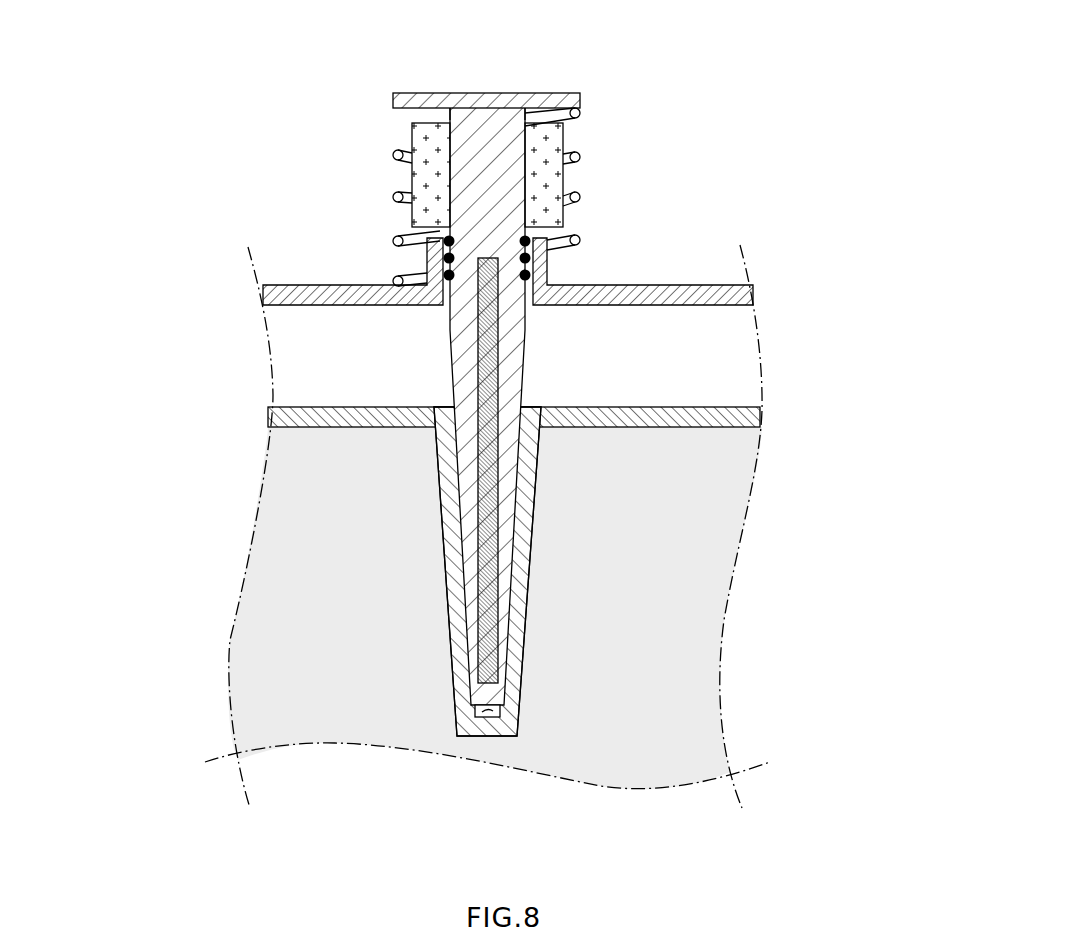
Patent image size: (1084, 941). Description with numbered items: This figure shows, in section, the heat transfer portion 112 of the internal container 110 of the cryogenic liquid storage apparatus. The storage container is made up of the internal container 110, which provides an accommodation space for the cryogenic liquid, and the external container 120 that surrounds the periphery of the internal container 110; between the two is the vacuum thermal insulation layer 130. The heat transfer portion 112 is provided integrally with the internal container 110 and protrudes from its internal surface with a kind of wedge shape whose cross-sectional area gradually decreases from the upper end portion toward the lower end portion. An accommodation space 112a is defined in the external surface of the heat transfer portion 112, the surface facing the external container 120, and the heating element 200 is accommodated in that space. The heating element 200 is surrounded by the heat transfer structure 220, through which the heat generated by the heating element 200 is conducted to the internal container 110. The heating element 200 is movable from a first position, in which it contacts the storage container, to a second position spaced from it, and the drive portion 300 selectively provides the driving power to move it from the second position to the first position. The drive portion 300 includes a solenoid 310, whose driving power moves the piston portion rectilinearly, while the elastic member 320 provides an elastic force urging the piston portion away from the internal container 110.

The internal container 110 is at (267, 413).
The heat transfer portion 112 is at (469, 726).
The accommodation space 112a is at (492, 717).
The external container 120 is at (262, 292).
The vacuum thermal insulation layer 130 is at (285, 359).
The heating element 200 is at (520, 492).
The heat transfer structure 220 is at (540, 352).
The drive portion 300 is at (486, 166).
The solenoid 310 is at (428, 134).
The elastic member 320 is at (394, 153).